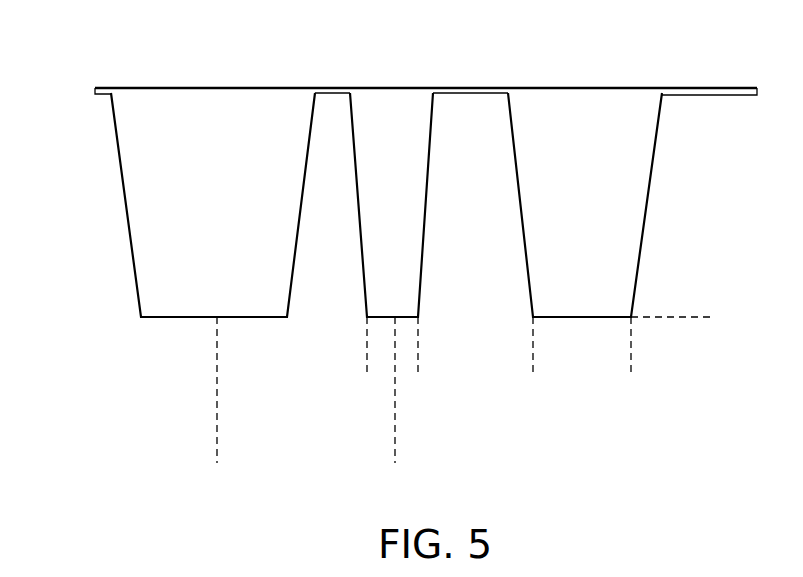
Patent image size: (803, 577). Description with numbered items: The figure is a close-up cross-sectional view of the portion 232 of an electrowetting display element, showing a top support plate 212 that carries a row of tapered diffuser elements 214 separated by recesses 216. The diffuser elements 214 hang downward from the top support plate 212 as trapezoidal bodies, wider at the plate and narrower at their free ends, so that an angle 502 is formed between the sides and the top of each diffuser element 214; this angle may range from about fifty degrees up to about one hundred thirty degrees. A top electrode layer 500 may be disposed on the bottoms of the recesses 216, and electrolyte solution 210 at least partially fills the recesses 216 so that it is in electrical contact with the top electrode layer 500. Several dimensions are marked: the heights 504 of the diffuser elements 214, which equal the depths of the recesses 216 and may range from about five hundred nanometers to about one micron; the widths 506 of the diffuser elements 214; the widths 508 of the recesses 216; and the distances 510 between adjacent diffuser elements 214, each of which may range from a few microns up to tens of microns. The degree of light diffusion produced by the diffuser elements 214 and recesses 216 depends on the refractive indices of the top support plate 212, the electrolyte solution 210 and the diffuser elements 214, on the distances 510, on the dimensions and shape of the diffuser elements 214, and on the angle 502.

The electrolyte solution 210 is at (537, 478).
The top support plate 212 is at (331, 66).
The diffuser elements 214 is at (230, 208).
The recesses 216 is at (347, 243).
The portion 232 is at (642, 48).
The top electrode layer 500 is at (106, 96).
The angle 502 is at (169, 315).
The heights 504 is at (680, 95).
The widths 506 is at (367, 353).
The widths 508 is at (533, 335).
The distances 510 is at (395, 436).